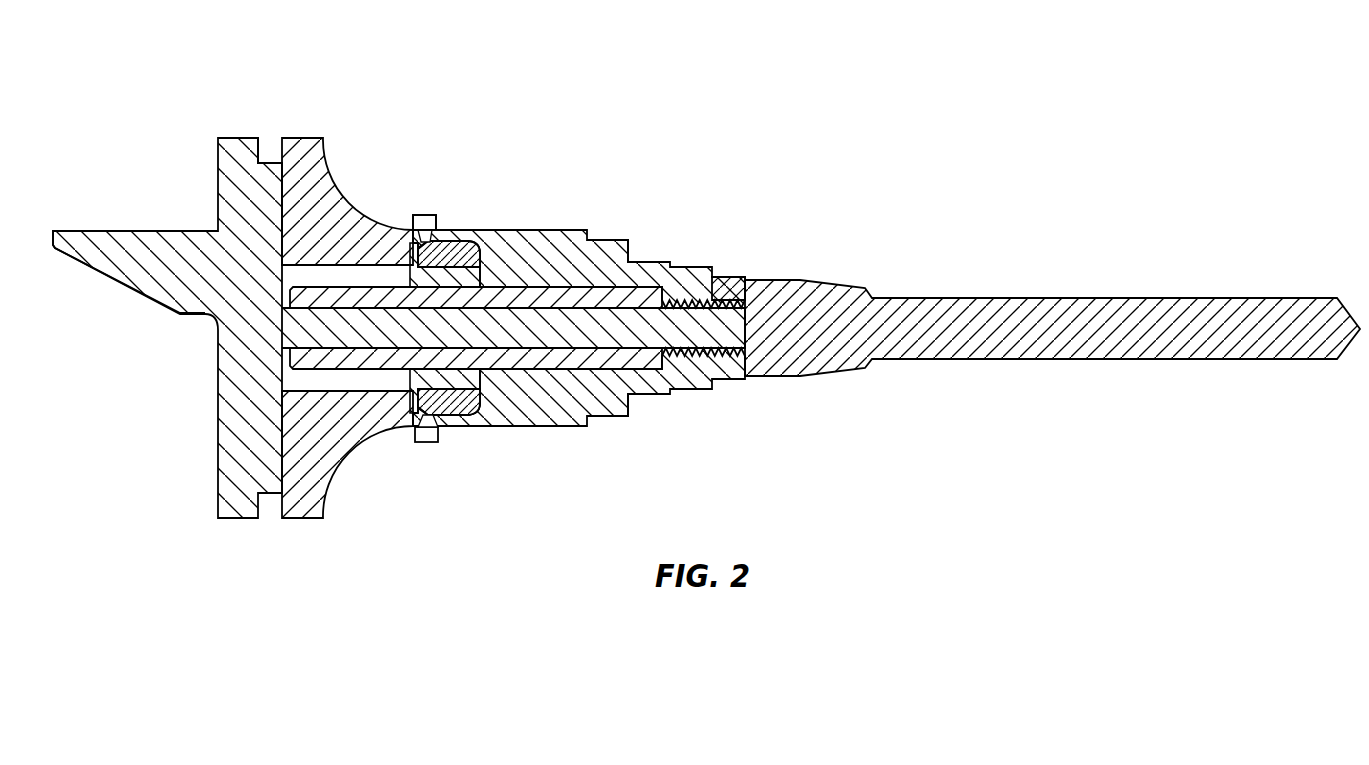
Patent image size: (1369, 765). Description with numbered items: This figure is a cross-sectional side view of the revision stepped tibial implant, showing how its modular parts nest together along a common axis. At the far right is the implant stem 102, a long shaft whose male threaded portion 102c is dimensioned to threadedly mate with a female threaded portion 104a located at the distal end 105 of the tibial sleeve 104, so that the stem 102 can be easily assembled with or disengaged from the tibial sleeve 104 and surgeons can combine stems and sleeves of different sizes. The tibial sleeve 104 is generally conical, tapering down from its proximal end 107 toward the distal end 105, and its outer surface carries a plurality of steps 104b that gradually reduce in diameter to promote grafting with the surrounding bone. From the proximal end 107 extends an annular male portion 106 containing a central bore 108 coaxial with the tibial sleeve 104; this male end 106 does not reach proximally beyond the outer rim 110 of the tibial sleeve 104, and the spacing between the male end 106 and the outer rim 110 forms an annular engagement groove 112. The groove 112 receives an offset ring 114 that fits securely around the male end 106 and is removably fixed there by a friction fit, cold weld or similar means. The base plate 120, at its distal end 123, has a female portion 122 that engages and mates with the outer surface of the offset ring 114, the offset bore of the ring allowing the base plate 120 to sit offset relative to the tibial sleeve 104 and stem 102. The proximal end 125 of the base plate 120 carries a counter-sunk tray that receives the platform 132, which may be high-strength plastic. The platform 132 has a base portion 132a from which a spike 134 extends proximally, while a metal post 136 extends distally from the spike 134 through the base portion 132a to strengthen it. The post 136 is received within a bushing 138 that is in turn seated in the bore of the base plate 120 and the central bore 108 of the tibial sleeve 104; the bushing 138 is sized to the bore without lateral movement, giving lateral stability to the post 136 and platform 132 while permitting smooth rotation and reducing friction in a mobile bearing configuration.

The implant stem 102 is at (1030, 318).
The male threaded portion 102c is at (733, 380).
The tibial sleeve 104 is at (640, 276).
The female threaded portion 104a is at (713, 279).
The steps 104b is at (620, 240).
The distal end 105 is at (715, 406).
The annular male portion 106 is at (443, 272).
The proximal end 107 is at (427, 198).
The central bore 108 is at (520, 295).
The outer rim 110 is at (418, 216).
The annular engagement groove 112 is at (465, 413).
The offset ring 114 is at (457, 403).
The base plate 120 is at (316, 143).
The female portion 122 is at (460, 248).
The distal end 123 is at (393, 461).
The proximal end 125 is at (278, 122).
The platform 132 is at (200, 352).
The base portion 132a is at (230, 188).
The spike 134 is at (110, 248).
The post 136 is at (548, 322).
The bushing 138 is at (637, 393).